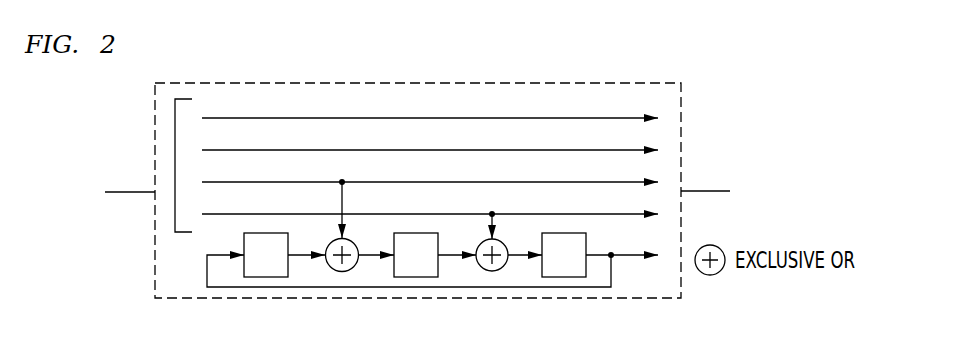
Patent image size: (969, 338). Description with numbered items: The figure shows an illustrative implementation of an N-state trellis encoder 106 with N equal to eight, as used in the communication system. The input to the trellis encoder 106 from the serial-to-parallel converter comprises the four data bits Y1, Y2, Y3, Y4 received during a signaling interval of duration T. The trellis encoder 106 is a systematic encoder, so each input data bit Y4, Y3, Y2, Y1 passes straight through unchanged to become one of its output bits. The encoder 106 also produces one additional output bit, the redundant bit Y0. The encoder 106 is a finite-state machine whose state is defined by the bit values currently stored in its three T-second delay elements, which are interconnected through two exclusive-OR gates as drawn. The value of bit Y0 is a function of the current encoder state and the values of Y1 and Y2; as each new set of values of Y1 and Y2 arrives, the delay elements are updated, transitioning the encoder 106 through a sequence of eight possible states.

The trellis encoder 106 is at (417, 176).
The data bit Y4 is at (430, 105).
The data bit Y3 is at (430, 137).
The data bit Y2 is at (430, 197).
The data bit Y1 is at (430, 212).
The redundant bit Y0 is at (432, 258).